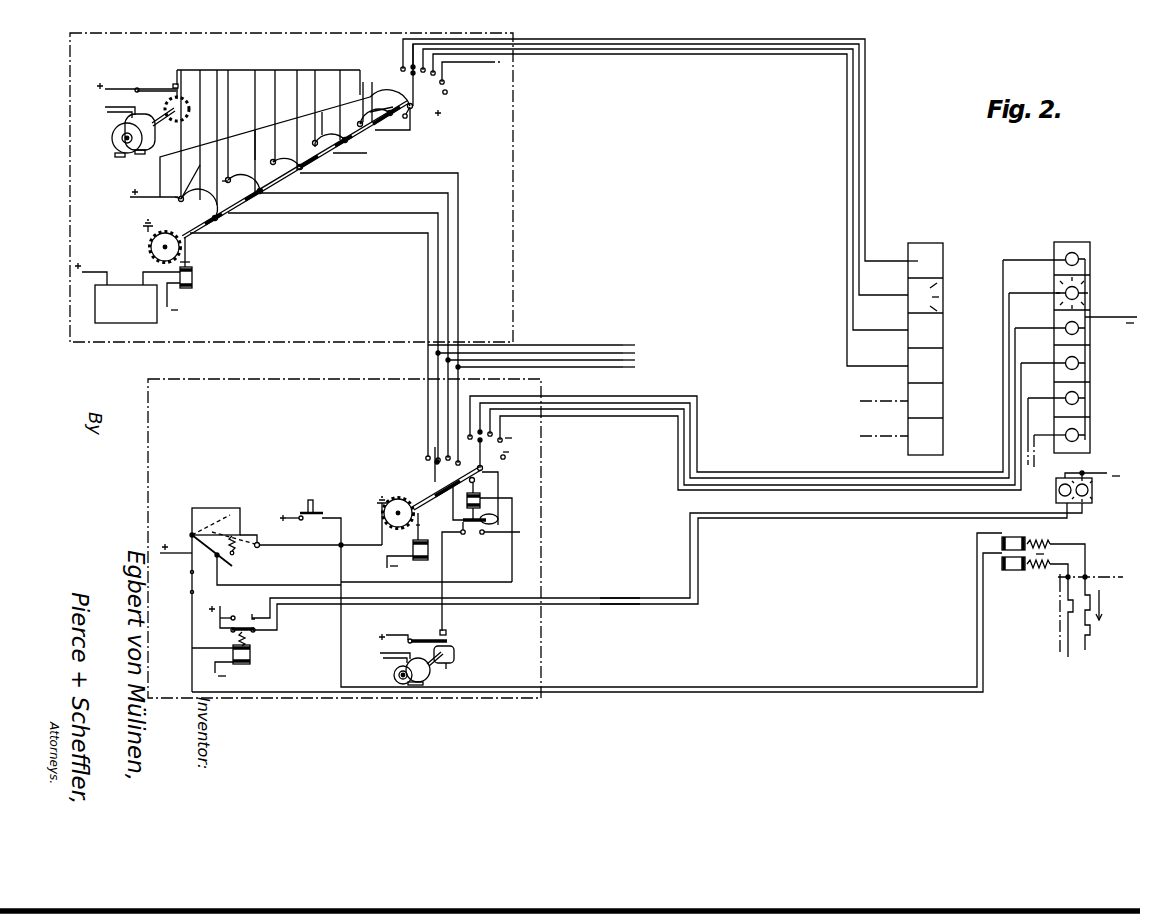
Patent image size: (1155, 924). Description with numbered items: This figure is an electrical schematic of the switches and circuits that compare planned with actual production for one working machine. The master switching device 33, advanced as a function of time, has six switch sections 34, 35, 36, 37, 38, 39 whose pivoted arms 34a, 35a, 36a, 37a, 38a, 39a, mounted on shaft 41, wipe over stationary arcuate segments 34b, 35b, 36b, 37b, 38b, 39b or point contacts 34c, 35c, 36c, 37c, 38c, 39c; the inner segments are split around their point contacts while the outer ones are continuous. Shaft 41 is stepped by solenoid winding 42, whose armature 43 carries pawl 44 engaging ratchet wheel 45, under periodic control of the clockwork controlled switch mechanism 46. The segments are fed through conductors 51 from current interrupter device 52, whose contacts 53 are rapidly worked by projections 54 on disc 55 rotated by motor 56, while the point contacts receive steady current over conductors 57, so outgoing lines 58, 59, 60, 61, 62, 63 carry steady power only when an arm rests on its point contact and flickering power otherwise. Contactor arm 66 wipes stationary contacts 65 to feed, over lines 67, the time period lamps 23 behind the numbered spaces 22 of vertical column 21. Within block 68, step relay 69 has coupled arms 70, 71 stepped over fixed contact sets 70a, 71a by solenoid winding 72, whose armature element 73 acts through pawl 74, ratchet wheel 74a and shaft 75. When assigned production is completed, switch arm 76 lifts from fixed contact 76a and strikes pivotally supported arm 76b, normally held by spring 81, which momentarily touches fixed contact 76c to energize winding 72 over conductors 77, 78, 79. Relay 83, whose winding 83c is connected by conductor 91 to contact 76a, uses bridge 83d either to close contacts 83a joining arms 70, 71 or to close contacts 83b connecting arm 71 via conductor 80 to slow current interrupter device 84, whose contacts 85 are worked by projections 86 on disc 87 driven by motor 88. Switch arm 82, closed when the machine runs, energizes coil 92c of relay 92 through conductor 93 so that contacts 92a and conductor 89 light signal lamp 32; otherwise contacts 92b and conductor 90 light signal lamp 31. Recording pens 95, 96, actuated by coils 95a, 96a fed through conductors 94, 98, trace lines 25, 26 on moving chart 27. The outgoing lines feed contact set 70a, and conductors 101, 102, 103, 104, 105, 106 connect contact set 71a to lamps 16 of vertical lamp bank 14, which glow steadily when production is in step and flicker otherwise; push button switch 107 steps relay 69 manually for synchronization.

The vertical lamp bank 14 is at (1072, 242).
The lamps 16 is at (1079, 360).
The vertical column 21 is at (922, 242).
The rectangular spaces 22 is at (943, 266).
The time period lamps 23 is at (943, 297).
The recorded trace line 25 is at (1066, 604).
The recorded trace line 26 is at (1091, 633).
The moving chart 27 is at (1058, 638).
The signal lamp 31 is at (1058, 490).
The signal lamp 32 is at (1089, 490).
The master switching device 33 is at (513, 220).
The switch section 34 is at (183, 196).
The pivoted arm 34a is at (183, 234).
The arcuate segment 34b is at (199, 199).
The point contact 34c is at (179, 202).
The switch section 35 is at (225, 180).
The switch arm 35a is at (257, 192).
The arcuate segment 35b is at (262, 197).
The point contact 35c is at (230, 183).
The switch section 36 is at (261, 154).
The switch arm 36a is at (297, 167).
The arcuate segment 36b is at (300, 176).
The point contact 36c is at (264, 152).
The switch section 37 is at (310, 120).
The switch arm 37a is at (322, 141).
The arcuate segment 37b is at (340, 147).
The point contact 37c is at (309, 133).
The switch section 38 is at (358, 95).
The switch arm 38a is at (353, 141).
The arcuate segment 38b is at (369, 117).
The point contact 38c is at (352, 106).
The switch section 39 is at (392, 84).
The switch arm 39a is at (383, 107).
The arcuate segment 39b is at (404, 92).
The point contact 39c is at (407, 116).
The shaft 41 is at (212, 218).
The solenoid winding 42 is at (193, 280).
The armature 43 is at (192, 263).
The pawl 44 is at (187, 243).
The ratchet wheel 45 is at (150, 253).
The clockwork controlled switch mechanism 46 is at (112, 323).
The conductors 51 is at (286, 68).
The current interrupter device 52 is at (137, 87).
The contacts 53 is at (172, 86).
The projections 54 is at (179, 99).
The disc 55 is at (180, 120).
The motor 56 is at (114, 133).
The conductors 57 is at (255, 130).
The outgoing line 58 is at (318, 234).
The outgoing line 59 is at (323, 214).
The outgoing line 60 is at (342, 194).
The outgoing line 61 is at (364, 174).
The outgoing line 62 is at (371, 152).
The outgoing line 63 is at (407, 130).
The stationary contacts 65 is at (449, 92).
The contactor arm 66 is at (414, 91).
The lines 67 is at (600, 38).
The switching apparatus block 68 is at (541, 490).
The step relay 69 is at (395, 498).
The coupled arm 70 is at (434, 472).
The fixed set of contacts 70a is at (426, 457).
The coupled arm 71 is at (481, 450).
The fixed set of contacts 71a is at (503, 457).
The solenoid winding 72 is at (407, 558).
The armature element 73 is at (420, 525).
The pawl 74 is at (420, 511).
The ratchet wheel 74a is at (381, 525).
The shaft 75 is at (433, 499).
The switch arm 76 is at (232, 538).
The fixed contact 76a is at (219, 557).
The pivotally supported arm 76b is at (258, 534).
The fixed contact 76c is at (261, 548).
The conductor 77 is at (190, 536).
The conductor 78 is at (222, 508).
The conductor 79 is at (320, 545).
The conductor 80 is at (443, 557).
The spring 81 is at (237, 547).
The switch arm 82 is at (190, 578).
The relay 83 is at (483, 495).
The set of contacts 83a is at (499, 519).
The set of contacts 83b is at (466, 535).
The winding 83c is at (483, 502).
The conductive bridge 83d is at (500, 533).
The current interrupter device 84 is at (456, 650).
The contacts 85 is at (447, 634).
The projections 86 is at (453, 660).
The disc 87 is at (442, 665).
The motor 88 is at (394, 672).
The conductor 89 is at (616, 604).
The conductor 90 is at (618, 598).
The conductor 91 is at (476, 582).
The relay 92 is at (253, 652).
The set of contacts 92a is at (258, 631).
The set of contacts 92b is at (253, 613).
The coil 92c is at (251, 662).
The conductor 93 is at (220, 647).
The conductor 94 is at (724, 692).
The recording pen 95 is at (1065, 578).
The coil 95a is at (1015, 571).
The recording pen 96 is at (1088, 577).
The coil 96a is at (1023, 536).
The conductor 98 is at (722, 687).
The conductor 101 is at (593, 396).
The conductor 102 is at (620, 403).
The conductor 103 is at (633, 409).
The conductor 104 is at (658, 416).
The conductor 105 is at (506, 438).
The conductor 106 is at (504, 452).
The push button switch 107 is at (303, 510).